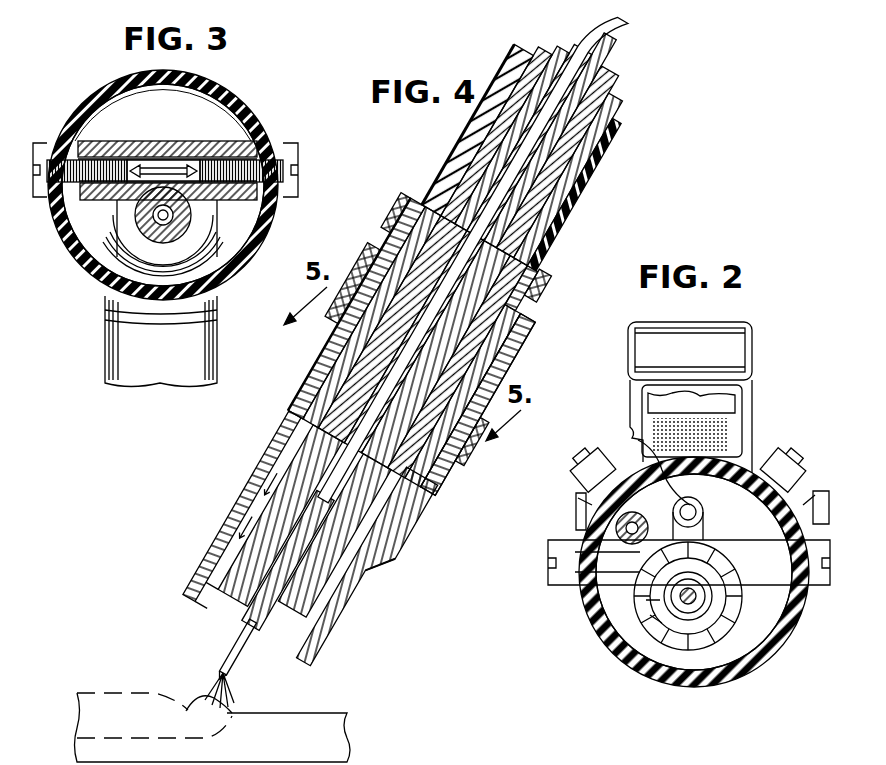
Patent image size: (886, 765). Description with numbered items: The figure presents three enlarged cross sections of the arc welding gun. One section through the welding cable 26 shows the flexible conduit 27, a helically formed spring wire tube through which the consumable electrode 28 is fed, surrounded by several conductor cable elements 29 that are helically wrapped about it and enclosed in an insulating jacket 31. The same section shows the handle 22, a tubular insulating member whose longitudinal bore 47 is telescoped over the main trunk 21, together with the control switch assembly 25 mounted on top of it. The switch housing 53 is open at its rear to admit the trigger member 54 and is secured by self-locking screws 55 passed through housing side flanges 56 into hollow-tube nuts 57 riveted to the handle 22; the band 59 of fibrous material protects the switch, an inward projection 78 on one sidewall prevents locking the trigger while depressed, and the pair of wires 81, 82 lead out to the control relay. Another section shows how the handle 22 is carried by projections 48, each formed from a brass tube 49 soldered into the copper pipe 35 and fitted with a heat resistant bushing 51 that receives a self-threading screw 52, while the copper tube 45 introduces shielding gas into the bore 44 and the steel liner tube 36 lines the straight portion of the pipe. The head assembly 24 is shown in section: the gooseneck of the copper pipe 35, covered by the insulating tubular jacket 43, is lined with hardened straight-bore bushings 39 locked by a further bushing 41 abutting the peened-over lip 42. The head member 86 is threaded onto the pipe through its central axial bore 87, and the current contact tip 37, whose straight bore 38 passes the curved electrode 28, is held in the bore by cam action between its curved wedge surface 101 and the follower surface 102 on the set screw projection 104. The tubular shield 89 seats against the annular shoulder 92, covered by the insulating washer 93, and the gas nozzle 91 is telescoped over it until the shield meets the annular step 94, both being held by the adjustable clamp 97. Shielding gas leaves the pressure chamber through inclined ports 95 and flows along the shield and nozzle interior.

In FIG. 3, the main trunk 21 is at (107, 308).
In FIG. 4, the main trunk 21 is at (455, 143).
In FIG. 3, the handle 22 is at (205, 72).
In FIG. 2, the handle 22 is at (798, 618).
In FIG. 4, the head assembly 24 is at (243, 488).
In FIG. 2, the control switch assembly 25 is at (645, 324).
In FIG. 2, the welding cable 26 is at (720, 655).
In FIG. 2, the flexible conduit 27 is at (700, 622).
In FIG. 3, the consumable electrode 28 is at (232, 270).
In FIG. 4, the consumable electrode 28 is at (220, 655).
In FIG. 2, the consumable electrode 28 is at (683, 606).
In FIG. 2, the conductor cable elements 29 is at (650, 620).
In FIG. 2, the jacket 31 is at (735, 640).
In FIG. 3, the copper pipe 35 is at (92, 256).
In FIG. 4, the copper pipe 35 is at (613, 87).
In FIG. 3, the steel liner tube 36 is at (257, 232).
In FIG. 4, the current contact tip 37 is at (330, 630).
In FIG. 4, the straight bore 38 is at (340, 583).
In FIG. 4, the straight-bore bushings 39 is at (585, 150).
In FIG. 4, the bushing 41 is at (556, 213).
In FIG. 4, the peened-over lip 42 is at (512, 303).
In FIG. 4, the tubular jacket 43 is at (505, 68).
In FIG. 4, the bore 44 is at (617, 57).
In FIG. 2, the copper tube 45 is at (694, 503).
In FIG. 3, the longitudinal bore 47 is at (228, 95).
In FIG. 2, the longitudinal bore 47 is at (778, 645).
In FIG. 3, the projections 48 is at (230, 134).
In FIG. 3, the brass tube 49 is at (160, 141).
In FIG. 2, the brass tube 49 is at (630, 583).
In FIG. 3, the heat resistant bushing 51 is at (90, 198).
In FIG. 3, the self-threading screws 52 is at (40, 143).
In FIG. 2, the self-threading screws 52 is at (548, 570).
In FIG. 2, the housing 53 is at (728, 322).
In FIG. 2, the trigger member 54 is at (728, 398).
In FIG. 2, the self-locking screws 55 is at (573, 465).
In FIG. 2, the housing side flanges 56 is at (575, 512).
In FIG. 2, the nuts 57 is at (548, 543).
In FIG. 2, the band 59 is at (725, 430).
In FIG. 2, the inward projection 78 is at (632, 434).
In FIG. 2, the wire 81 is at (575, 583).
In FIG. 2, the wire 82 is at (622, 512).
In FIG. 4, the head member 86 is at (497, 344).
In FIG. 4, the central axial bore 87 is at (495, 360).
In FIG. 4, the tubular shield 89 is at (330, 346).
In FIG. 4, the gas nozzle 91 is at (225, 545).
In FIG. 4, the annular shoulder 92 is at (393, 207).
In FIG. 4, the washer 93 is at (533, 280).
In FIG. 4, the annular step 94 is at (372, 562).
In FIG. 4, the ports 95 is at (335, 378).
In FIG. 4, the adjustable clamp 97 is at (507, 326).
In FIG. 4, the curved wedge surface 101 is at (340, 360).
In FIG. 4, the follower surface 102 is at (465, 436).
In FIG. 4, the projection 104 is at (345, 285).